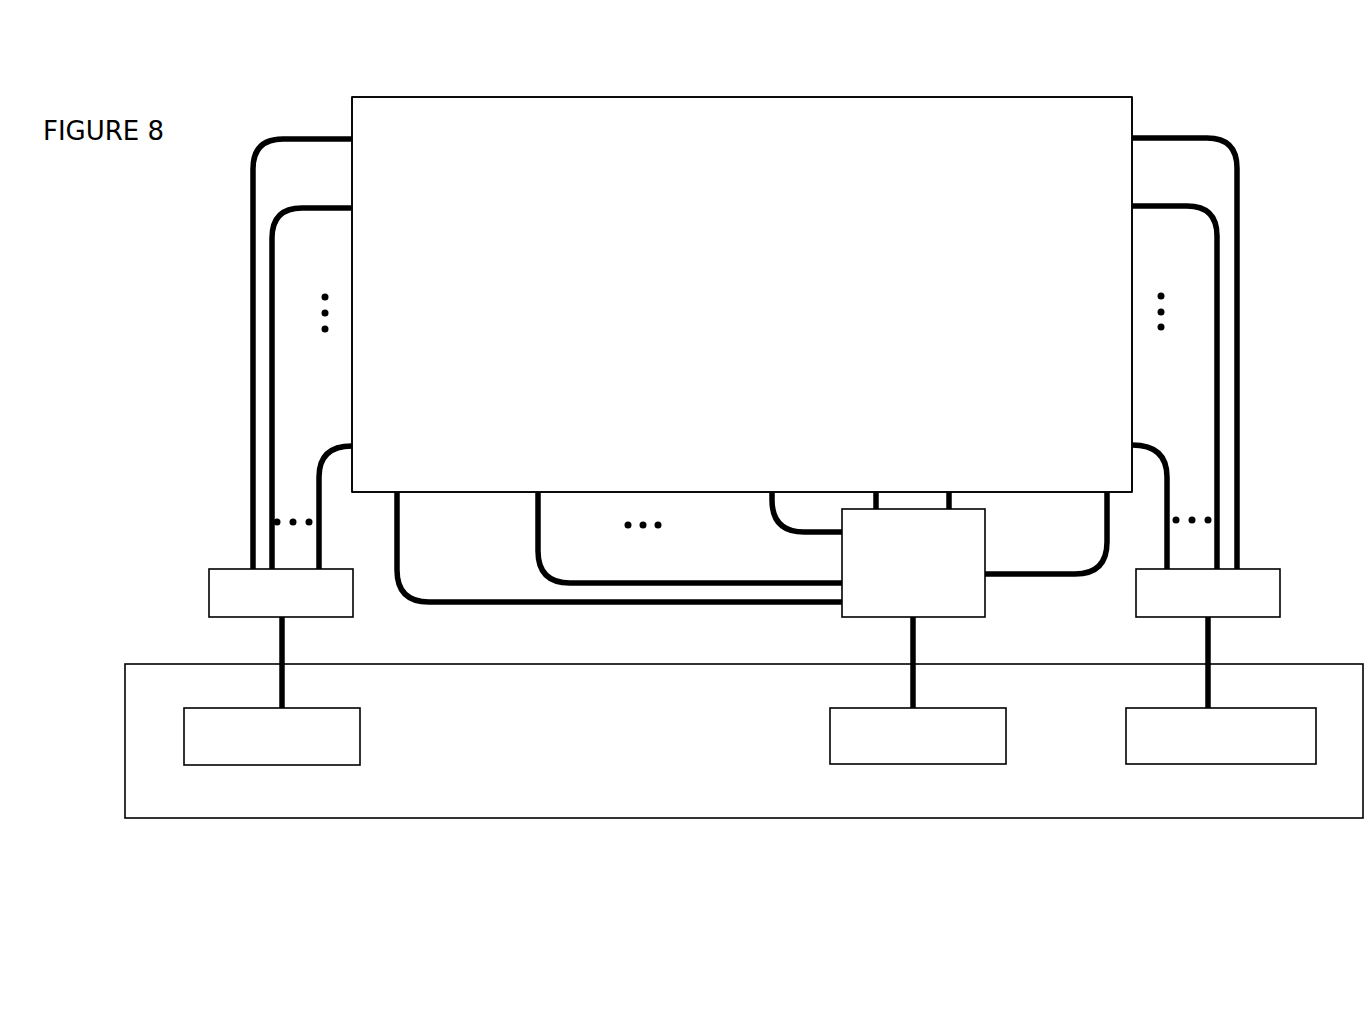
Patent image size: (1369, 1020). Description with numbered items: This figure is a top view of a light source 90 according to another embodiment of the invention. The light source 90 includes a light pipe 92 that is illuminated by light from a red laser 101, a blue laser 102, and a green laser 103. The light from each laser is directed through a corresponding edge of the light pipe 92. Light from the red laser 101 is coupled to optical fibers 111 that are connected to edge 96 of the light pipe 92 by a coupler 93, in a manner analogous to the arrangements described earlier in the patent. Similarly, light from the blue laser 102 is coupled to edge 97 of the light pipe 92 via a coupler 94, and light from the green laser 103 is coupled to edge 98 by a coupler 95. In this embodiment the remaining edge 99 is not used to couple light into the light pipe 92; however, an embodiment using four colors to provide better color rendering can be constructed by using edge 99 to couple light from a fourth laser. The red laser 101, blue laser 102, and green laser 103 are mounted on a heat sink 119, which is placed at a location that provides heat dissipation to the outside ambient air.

The light source 90 is at (192, 65).
The light pipe 92 is at (742, 294).
The coupler 93 is at (209, 596).
The coupler 94 is at (985, 600).
The coupler 95 is at (1280, 597).
The edge 96 is at (352, 235).
The edge 97 is at (735, 491).
The edge 98 is at (1131, 282).
The edge 99 is at (796, 98).
The red laser 101 is at (360, 735).
The blue laser 102 is at (830, 740).
The green laser 103 is at (1126, 740).
The optical fibers 111 is at (320, 206).
The heat sink 119 is at (150, 665).